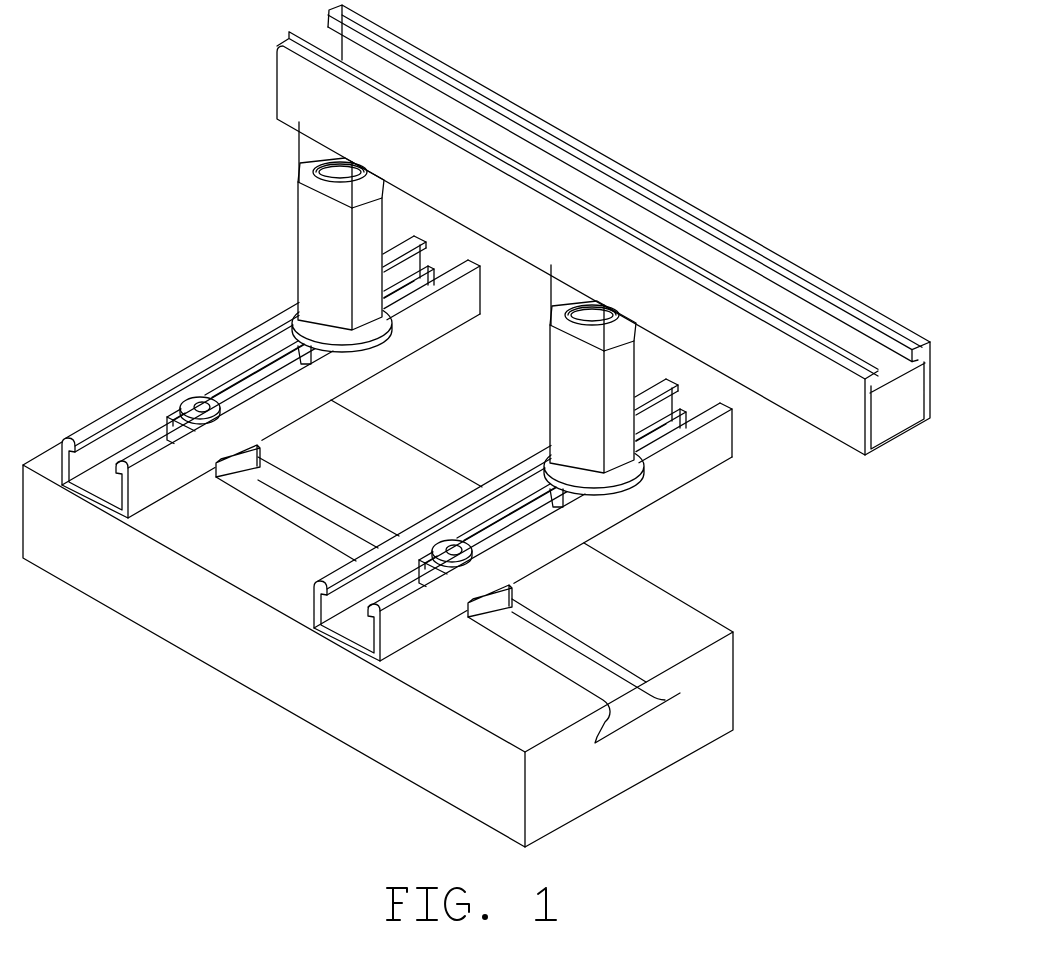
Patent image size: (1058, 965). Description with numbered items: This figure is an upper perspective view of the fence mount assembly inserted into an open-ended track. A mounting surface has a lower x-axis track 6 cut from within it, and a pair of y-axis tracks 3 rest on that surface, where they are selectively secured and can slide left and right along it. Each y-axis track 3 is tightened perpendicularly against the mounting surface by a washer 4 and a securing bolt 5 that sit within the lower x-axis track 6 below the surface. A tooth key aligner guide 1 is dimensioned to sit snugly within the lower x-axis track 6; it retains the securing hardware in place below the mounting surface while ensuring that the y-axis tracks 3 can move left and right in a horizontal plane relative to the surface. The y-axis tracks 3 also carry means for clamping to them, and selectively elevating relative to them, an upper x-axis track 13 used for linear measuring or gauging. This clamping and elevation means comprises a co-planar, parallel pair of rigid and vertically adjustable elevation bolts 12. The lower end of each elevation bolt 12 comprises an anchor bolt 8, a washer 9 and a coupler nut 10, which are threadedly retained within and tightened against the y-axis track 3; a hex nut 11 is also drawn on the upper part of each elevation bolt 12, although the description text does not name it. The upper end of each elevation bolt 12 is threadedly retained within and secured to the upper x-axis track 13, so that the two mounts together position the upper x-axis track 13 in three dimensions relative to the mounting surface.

The tooth key aligner guide 1 is at (235, 470).
The y-axis track 3 is at (109, 493).
The washer 4 is at (169, 434).
The securing bolt 5 is at (194, 410).
The lower x-axis track 6 is at (625, 705).
The anchor bolt 8 is at (301, 351).
The washer 9 is at (300, 318).
The coupler nut 10 is at (613, 425).
The hex nut 11 is at (335, 197).
The elevation bolt 12 is at (331, 152).
The upper x-axis track 13 is at (657, 233).